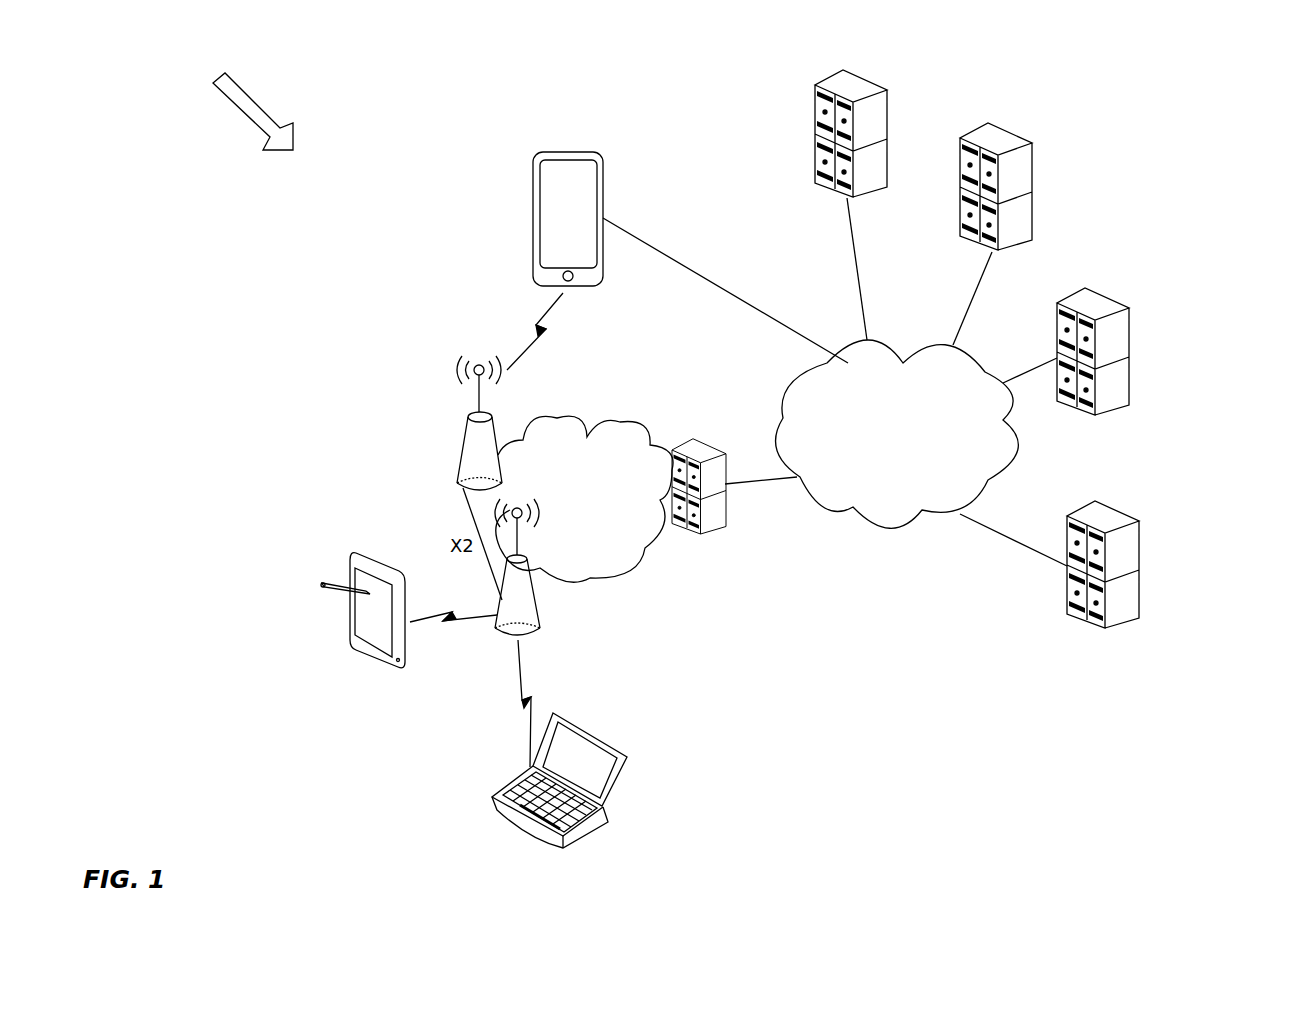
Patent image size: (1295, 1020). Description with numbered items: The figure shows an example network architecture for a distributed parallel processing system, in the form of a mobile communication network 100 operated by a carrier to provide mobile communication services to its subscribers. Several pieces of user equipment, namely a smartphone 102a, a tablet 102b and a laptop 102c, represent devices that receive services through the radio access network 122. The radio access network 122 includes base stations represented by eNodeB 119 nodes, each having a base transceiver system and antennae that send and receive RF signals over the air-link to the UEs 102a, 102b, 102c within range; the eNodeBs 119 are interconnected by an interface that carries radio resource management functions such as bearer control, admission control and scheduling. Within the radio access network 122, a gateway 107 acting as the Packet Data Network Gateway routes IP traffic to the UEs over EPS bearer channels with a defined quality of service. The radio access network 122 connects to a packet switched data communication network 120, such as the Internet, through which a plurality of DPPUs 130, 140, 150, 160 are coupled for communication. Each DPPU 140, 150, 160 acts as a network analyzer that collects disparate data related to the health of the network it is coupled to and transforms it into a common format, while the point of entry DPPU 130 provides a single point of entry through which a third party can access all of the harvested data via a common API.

The mobile communication network 100 is at (240, 104).
The user equipment 102a is at (533, 197).
The user equipment 102b is at (345, 629).
The user equipment 102c is at (492, 807).
The gateway 107 is at (705, 474).
The eNodeB 119 is at (463, 434).
The packet switched data communication network 120 is at (1005, 470).
The radio access network 122 is at (552, 417).
The point of entry DPPU 130 is at (1140, 567).
The DPPU 140 is at (1129, 337).
The DPPU 150 is at (1032, 150).
The DPPU 160 is at (887, 97).